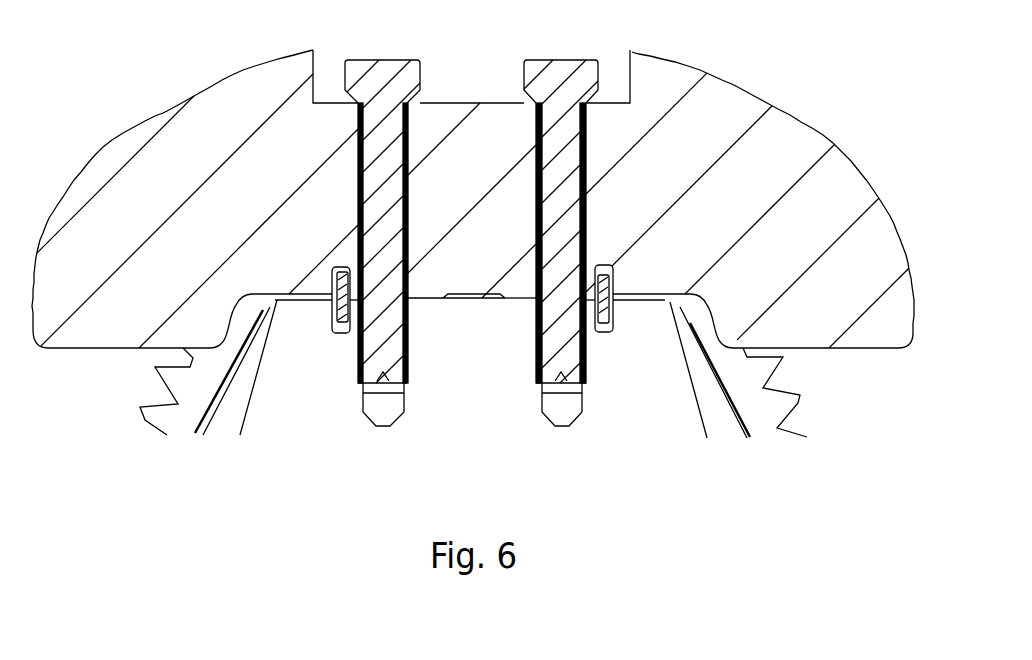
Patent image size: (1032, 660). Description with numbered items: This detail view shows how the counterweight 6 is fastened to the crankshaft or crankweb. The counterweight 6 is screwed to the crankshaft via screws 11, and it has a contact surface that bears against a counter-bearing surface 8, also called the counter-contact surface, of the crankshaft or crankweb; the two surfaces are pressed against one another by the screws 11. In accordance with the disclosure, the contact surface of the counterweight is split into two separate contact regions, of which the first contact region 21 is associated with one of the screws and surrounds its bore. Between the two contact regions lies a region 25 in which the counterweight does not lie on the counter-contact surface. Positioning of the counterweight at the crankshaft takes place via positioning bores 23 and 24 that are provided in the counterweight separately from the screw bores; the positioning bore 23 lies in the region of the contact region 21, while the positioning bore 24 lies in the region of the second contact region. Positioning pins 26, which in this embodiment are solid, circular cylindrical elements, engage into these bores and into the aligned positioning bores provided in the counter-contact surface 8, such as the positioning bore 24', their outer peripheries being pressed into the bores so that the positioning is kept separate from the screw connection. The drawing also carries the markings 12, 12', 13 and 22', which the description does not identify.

The counterweight 6 is at (775, 152).
The counter-bearing surface 8 is at (420, 300).
The screws 11 is at (407, 141).
The housing section 12 is at (473, 210).
The first screw 12' is at (361, 260).
The second screw 13 is at (587, 370).
The first contact region 21 is at (522, 288).
The first lip 22' is at (234, 367).
The positioning bore 23 is at (340, 292).
The positioning bore 24 is at (633, 284).
The positioning bore 24' is at (713, 370).
The region 25 is at (471, 299).
The positioning pins 26 is at (320, 296).